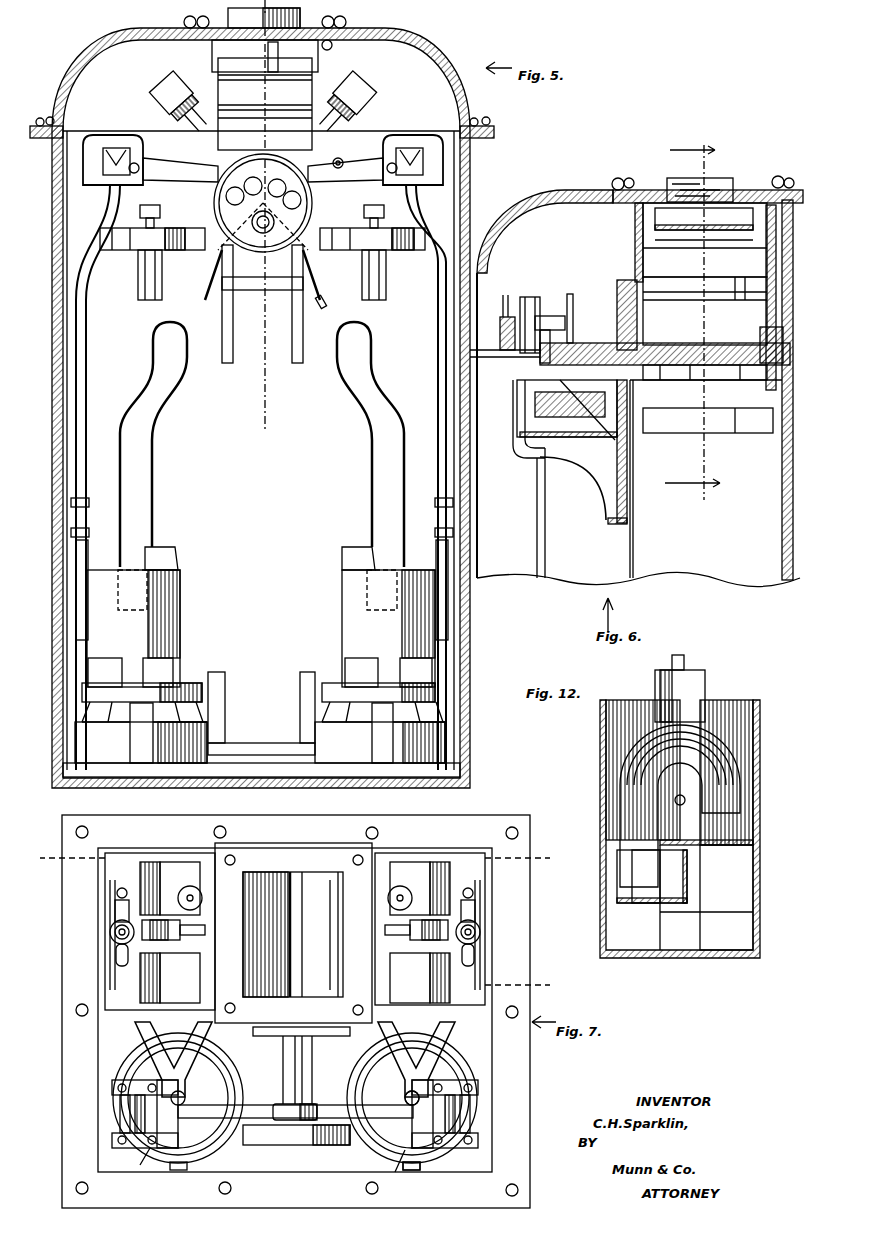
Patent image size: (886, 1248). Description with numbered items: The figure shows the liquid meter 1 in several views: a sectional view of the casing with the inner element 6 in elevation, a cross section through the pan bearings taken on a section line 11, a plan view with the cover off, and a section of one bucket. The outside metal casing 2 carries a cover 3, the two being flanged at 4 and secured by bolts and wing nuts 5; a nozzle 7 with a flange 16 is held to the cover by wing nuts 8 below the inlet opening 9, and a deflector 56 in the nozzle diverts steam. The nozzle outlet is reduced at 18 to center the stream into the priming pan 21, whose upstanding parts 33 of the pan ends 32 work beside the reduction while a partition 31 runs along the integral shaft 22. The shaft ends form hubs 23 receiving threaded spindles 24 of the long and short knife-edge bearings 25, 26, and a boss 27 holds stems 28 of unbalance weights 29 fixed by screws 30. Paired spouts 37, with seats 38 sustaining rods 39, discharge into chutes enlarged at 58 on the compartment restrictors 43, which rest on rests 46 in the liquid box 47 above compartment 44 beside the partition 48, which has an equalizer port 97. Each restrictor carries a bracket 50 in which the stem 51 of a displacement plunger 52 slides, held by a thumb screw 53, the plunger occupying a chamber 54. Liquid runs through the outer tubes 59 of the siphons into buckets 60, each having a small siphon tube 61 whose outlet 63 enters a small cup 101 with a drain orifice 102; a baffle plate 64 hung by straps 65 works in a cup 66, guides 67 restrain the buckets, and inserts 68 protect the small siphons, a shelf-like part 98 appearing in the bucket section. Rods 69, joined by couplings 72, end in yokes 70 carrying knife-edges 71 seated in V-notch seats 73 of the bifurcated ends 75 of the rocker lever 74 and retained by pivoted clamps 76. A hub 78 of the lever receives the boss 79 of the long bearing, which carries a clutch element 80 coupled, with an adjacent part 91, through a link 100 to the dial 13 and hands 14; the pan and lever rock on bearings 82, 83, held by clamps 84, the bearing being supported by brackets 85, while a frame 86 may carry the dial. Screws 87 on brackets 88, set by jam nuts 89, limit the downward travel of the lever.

In FIG. 5, the meter 1 is at (60, 86).
In FIG. 7, the meter 1 is at (560, 828).
In FIG. 5, the outside metal casing 2 is at (470, 150).
In FIG. 5, the cover 3 is at (458, 60).
In FIG. 6, the cover 3 is at (580, 196).
In FIG. 5, the flange 4 is at (497, 131).
In FIG. 7, the flange 4 is at (518, 840).
In FIG. 5, the bolts and wing nuts 5 is at (480, 116).
In FIG. 5, the inner element 6 is at (255, 400).
In FIG. 5, the nozzle 7 is at (220, 52).
In FIG. 7, the nozzle 7 is at (246, 868).
In FIG. 6, the nozzle 7 is at (640, 224).
In FIG. 5, the wing nuts 8 is at (184, 20).
In FIG. 6, the wing nuts 8 is at (703, 174).
In FIG. 5, the inlet opening 9 is at (305, 26).
In FIG. 6, the inlet opening 9 is at (738, 180).
In FIG. 6, the section line 11 is at (692, 321).
In FIG. 5, the dial 13 is at (112, 170).
In FIG. 5, the indicator hands 14 is at (230, 203).
In FIG. 5, the flange 16 is at (205, 44).
In FIG. 6, the flange 16 is at (570, 214).
In FIG. 5, the reduction 18 is at (235, 90).
In FIG. 7, the reduction 18 is at (300, 872).
In FIG. 6, the reduction 18 is at (650, 246).
In FIG. 7, the priming pan 21 is at (115, 990).
In FIG. 6, the priming pan 21 is at (690, 310).
In FIG. 6, the shaft 22 is at (690, 352).
In FIG. 6, the hubs 23 is at (688, 380).
In FIG. 6, the threaded spindles 24 is at (655, 380).
In FIG. 7, the long knife-edge bearing 25 is at (283, 1060).
In FIG. 6, the long knife-edge bearing 25 is at (585, 348).
In FIG. 6, the short knife-edge bearing 26 is at (765, 340).
In FIG. 6, the boss 27 is at (712, 380).
In FIG. 5, the stems 28 is at (165, 131).
In FIG. 6, the stems 28 is at (740, 300).
In FIG. 5, the pan unbalance weights 29 is at (150, 84).
In FIG. 5, the screws 30 is at (180, 82).
In FIG. 6, the partition 31 is at (722, 296).
In FIG. 7, the pan ends 32 is at (215, 860).
In FIG. 6, the pan ends 32 is at (646, 318).
In FIG. 6, the upstanding parts 33 is at (655, 238).
In FIG. 7, the spouts 37 is at (175, 862).
In FIG. 7, the seats 38 is at (205, 932).
In FIG. 7, the rods 39 is at (192, 886).
In FIG. 7, the compartment restrictors 43 is at (100, 848).
In FIG. 6, the compartment 44 is at (660, 565).
In FIG. 7, the rests 46 is at (291, 920).
In FIG. 5, the liquid box 47 is at (86, 360).
In FIG. 7, the liquid box 47 is at (236, 1016).
In FIG. 6, the liquid box 47 is at (622, 548).
In FIG. 6, the partition 48 is at (750, 590).
In FIG. 7, the bracket 50 is at (118, 958).
In FIG. 7, the stem 51 is at (110, 932).
In FIG. 7, the displacement plunger 52 is at (118, 968).
In FIG. 7, the thumb screw 53 is at (118, 893).
In FIG. 7, the chambers 54 is at (195, 950).
In FIG. 6, the deflector 56 is at (668, 186).
In FIG. 7, the enlargements 58 is at (150, 862).
In FIG. 5, the outer tubes 59 is at (150, 494).
In FIG. 5, the buckets 60 is at (165, 598).
In FIG. 7, the buckets 60 is at (178, 1170).
In FIG. 12, the buckets 60 is at (606, 730).
In FIG. 12, the small siphon tube 61 is at (630, 765).
In FIG. 7, the outlet 63 is at (565, 946).
In FIG. 5, the baffle plate 64 is at (215, 705).
In FIG. 12, the baffle plate 64 is at (710, 958).
In FIG. 5, the straps 65 is at (150, 665).
In FIG. 12, the straps 65 is at (740, 920).
In FIG. 5, the cup 66 is at (195, 740).
In FIG. 7, the cup 66 is at (125, 1055).
In FIG. 5, the guides 67 is at (200, 688).
In FIG. 7, the guides 67 is at (112, 1078).
In FIG. 12, the guides 67 is at (740, 815).
In FIG. 5, the inserts 68 is at (178, 552).
In FIG. 5, the rods 69 is at (76, 396).
In FIG. 6, the rods 69 is at (538, 536).
In FIG. 7, the yokes 70 is at (128, 1128).
In FIG. 5, the knife-edges 71 is at (95, 153).
In FIG. 7, the knife-edges 71 is at (112, 1148).
In FIG. 5, the couplings 72 is at (84, 518).
In FIG. 5, the seats 73 is at (476, 180).
In FIG. 5, the rocker lever 74 is at (172, 168).
In FIG. 7, the rocker lever 74 is at (200, 1112).
In FIG. 7, the bifurcated ends 75 is at (269, 1172).
In FIG. 5, the pivoted clamps 76 is at (100, 137).
In FIG. 7, the pivoted clamps 76 is at (465, 1150).
In FIG. 7, the hub 78 is at (280, 1104).
In FIG. 6, the hub 78 is at (545, 330).
In FIG. 6, the boss 79 is at (560, 316).
In FIG. 6, the clutch element 80 is at (530, 297).
In FIG. 7, the bearing 82 is at (312, 1100).
In FIG. 6, the bearing 82 is at (635, 428).
In FIG. 6, the bearing 83 is at (772, 433).
In FIG. 5, the clamps 84 is at (326, 166).
In FIG. 7, the clamps 84 is at (312, 1060).
In FIG. 6, the clamps 84 is at (666, 352).
In FIG. 5, the brackets 85 is at (318, 304).
In FIG. 6, the brackets 85 is at (607, 520).
In FIG. 5, the frame 86 is at (215, 300).
In FIG. 6, the frame 86 is at (575, 458).
In FIG. 5, the screws 87 is at (262, 210).
In FIG. 7, the screws 87 is at (397, 1097).
In FIG. 5, the brackets 88 is at (145, 268).
In FIG. 7, the brackets 88 is at (140, 1035).
In FIG. 6, the brackets 88 is at (548, 452).
In FIG. 5, the jam nuts 89 is at (410, 225).
In FIG. 6, the jam nuts 89 is at (522, 446).
In FIG. 6, the washer 91 is at (504, 318).
In FIG. 6, the equalizer port 97 is at (735, 440).
In FIG. 12, the shelf 98 is at (740, 850).
In FIG. 6, the link 100 is at (495, 357).
In FIG. 12, the small cups 101 is at (688, 875).
In FIG. 12, the orifice 102 is at (645, 910).